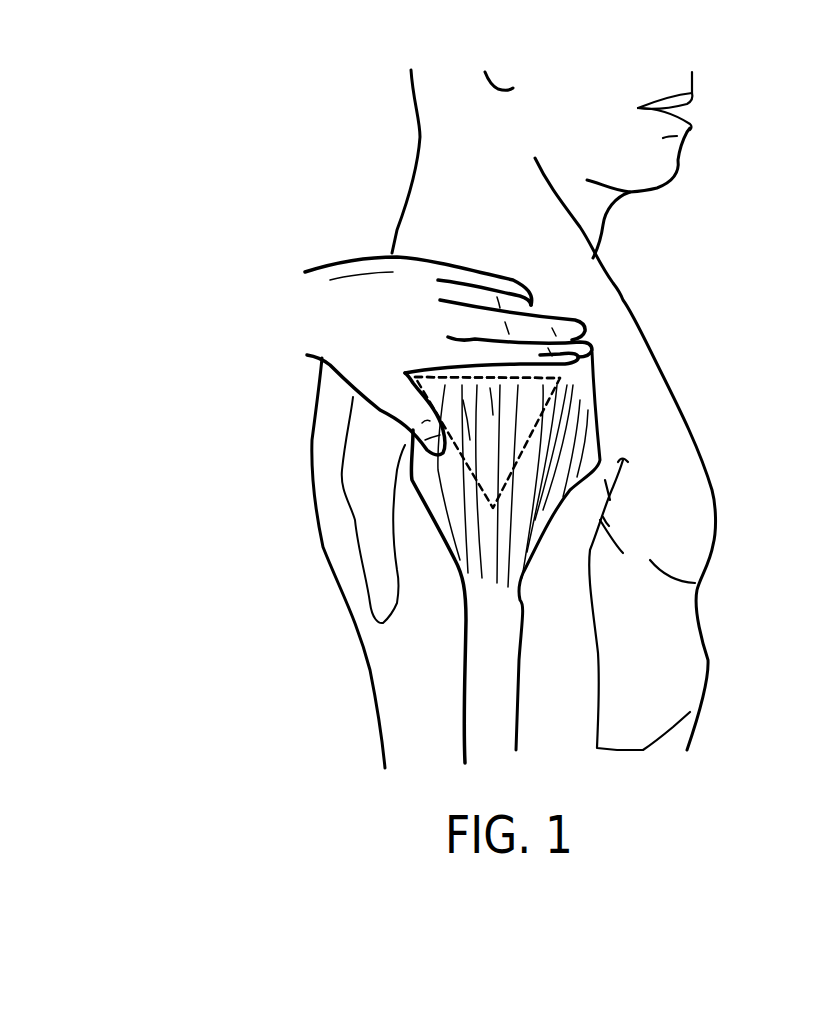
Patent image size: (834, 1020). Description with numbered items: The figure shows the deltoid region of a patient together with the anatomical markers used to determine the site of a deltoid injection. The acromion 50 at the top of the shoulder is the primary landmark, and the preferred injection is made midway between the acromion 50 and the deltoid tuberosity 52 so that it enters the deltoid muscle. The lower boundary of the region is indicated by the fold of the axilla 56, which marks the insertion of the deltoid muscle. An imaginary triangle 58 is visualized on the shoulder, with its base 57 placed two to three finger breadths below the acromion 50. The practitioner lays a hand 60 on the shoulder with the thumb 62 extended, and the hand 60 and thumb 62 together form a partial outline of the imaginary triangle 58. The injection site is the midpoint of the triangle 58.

The acromion 50 is at (575, 327).
The deltoid tuberosity 52 is at (460, 567).
The fold of the axilla 56 is at (442, 517).
The base of the triangle 57 is at (540, 377).
The triangle 58 is at (502, 493).
The hand 60 is at (312, 305).
The thumb 62 is at (400, 420).